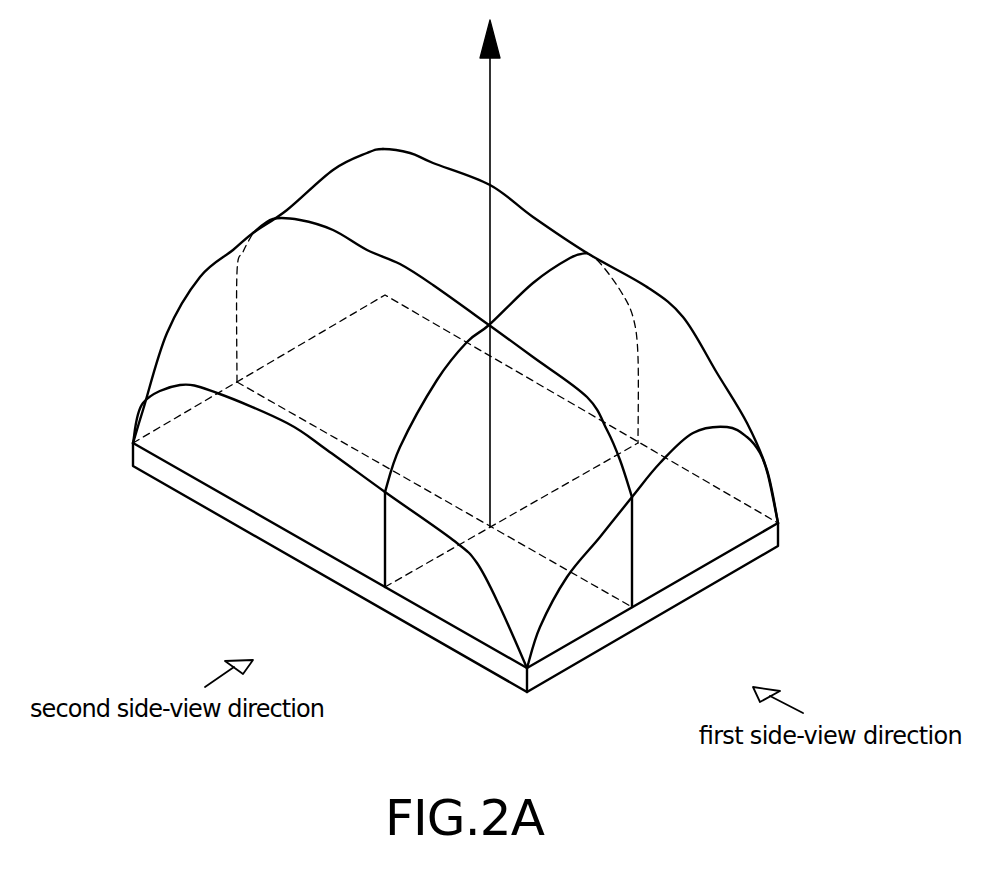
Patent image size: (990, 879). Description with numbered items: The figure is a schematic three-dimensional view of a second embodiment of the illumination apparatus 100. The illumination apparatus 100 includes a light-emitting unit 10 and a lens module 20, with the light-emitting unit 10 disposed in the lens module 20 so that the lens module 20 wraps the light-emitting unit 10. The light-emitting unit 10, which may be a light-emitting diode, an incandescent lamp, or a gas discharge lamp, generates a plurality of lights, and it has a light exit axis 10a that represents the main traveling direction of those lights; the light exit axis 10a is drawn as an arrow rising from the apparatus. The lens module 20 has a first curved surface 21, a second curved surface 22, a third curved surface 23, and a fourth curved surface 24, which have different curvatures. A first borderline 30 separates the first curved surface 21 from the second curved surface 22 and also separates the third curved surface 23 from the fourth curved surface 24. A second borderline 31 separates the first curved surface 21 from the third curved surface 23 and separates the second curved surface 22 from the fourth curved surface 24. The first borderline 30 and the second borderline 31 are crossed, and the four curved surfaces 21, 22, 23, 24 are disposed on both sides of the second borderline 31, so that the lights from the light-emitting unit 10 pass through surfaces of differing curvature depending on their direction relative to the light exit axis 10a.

The illumination apparatus 100 is at (268, 115).
The light-emitting unit 10 is at (667, 603).
The light exit axis 10a is at (490, 87).
The lens module 20 is at (462, 393).
The first curved surface 21 is at (687, 382).
The second curved surface 22 is at (502, 552).
The third curved surface 23 is at (390, 182).
The fourth curved surface 24 is at (213, 320).
The first borderline 30 is at (637, 532).
The second borderline 31 is at (383, 525).